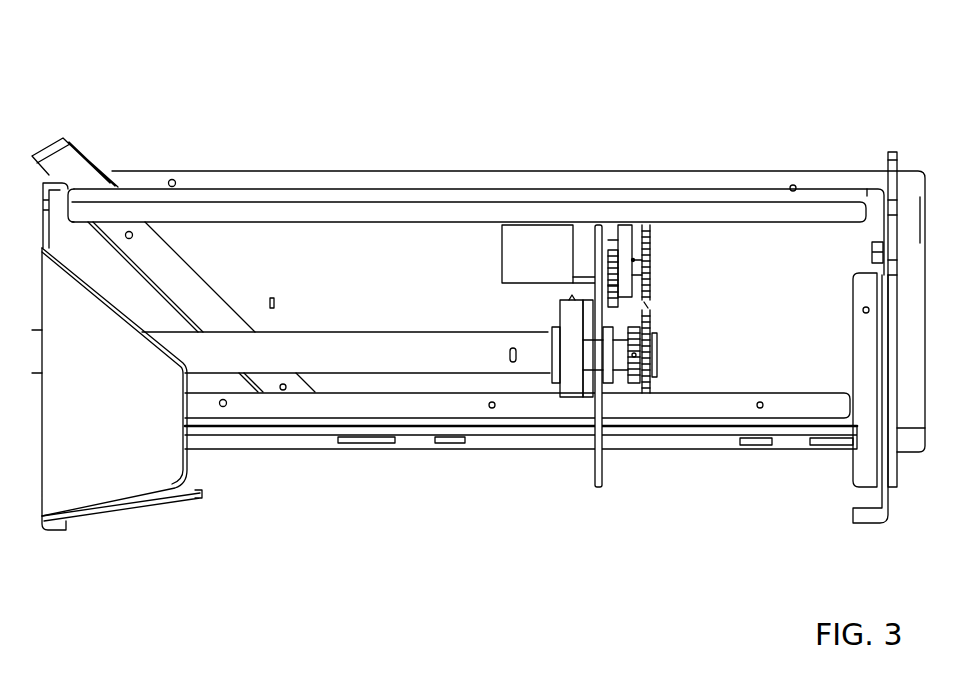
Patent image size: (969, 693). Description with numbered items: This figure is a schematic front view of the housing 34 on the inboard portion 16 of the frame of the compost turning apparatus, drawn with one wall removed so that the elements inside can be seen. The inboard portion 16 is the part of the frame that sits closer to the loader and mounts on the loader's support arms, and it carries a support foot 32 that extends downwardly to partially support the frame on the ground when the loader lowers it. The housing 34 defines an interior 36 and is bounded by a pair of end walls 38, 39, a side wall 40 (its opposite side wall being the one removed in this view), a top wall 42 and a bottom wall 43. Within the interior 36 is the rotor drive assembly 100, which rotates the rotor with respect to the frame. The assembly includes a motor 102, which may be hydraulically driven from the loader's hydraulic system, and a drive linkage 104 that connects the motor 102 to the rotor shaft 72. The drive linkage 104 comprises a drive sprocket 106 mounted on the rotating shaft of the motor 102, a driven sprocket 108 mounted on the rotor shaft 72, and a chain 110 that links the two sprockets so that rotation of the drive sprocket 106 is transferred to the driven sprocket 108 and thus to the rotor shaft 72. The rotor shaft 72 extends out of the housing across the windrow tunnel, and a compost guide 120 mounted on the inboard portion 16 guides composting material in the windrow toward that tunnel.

The inboard portion 16 is at (658, 89).
The support foot 32 is at (885, 477).
The housing 34 is at (650, 168).
The interior 36 is at (793, 372).
The end wall 38 is at (895, 218).
The end wall 39 is at (43, 225).
The side wall 40 is at (323, 260).
The top wall 42 is at (435, 172).
The bottom wall 43 is at (325, 450).
The rotor shaft 72 is at (460, 362).
The rotor drive assembly 100 is at (672, 322).
The motor 102 is at (548, 240).
The drive linkage 104 is at (658, 290).
The drive sprocket 106 is at (652, 247).
The driven sprocket 108 is at (648, 390).
The chain 110 is at (653, 313).
The compost guide 120 is at (145, 457).